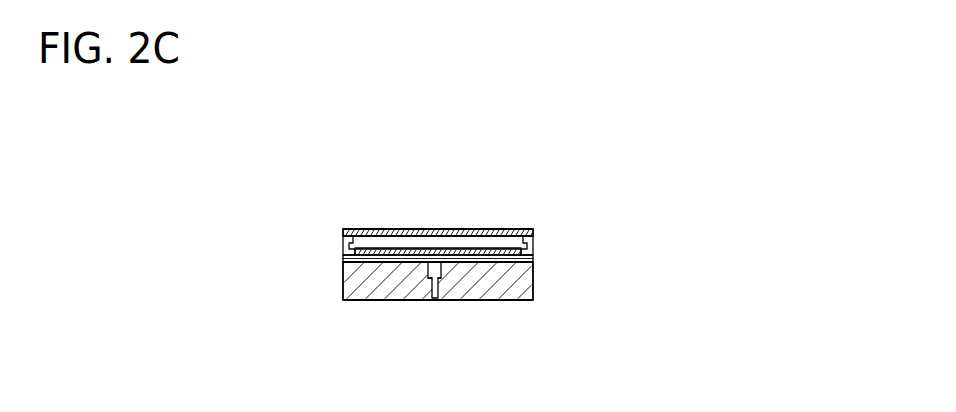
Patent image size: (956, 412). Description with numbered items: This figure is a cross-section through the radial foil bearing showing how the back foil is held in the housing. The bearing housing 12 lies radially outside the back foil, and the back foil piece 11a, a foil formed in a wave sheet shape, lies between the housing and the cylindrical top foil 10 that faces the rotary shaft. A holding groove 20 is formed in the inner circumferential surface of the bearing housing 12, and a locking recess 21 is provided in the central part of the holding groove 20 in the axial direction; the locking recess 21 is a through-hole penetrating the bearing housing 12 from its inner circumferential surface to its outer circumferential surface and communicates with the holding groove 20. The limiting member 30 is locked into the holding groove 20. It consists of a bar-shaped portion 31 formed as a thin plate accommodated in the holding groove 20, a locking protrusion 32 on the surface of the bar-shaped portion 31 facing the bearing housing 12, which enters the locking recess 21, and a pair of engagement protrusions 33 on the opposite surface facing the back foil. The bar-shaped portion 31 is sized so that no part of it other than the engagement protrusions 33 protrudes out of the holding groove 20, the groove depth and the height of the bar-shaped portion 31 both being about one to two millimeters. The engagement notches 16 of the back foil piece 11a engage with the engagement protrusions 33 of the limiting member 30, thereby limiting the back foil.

The top foil 10 is at (421, 229).
The back foil piece 11a is at (468, 249).
The bearing housing 12 is at (378, 283).
The engagement notch 16 is at (346, 255).
The holding groove 20 is at (485, 263).
The locking recess 21 is at (436, 298).
The limiting member 30 is at (500, 242).
The bar-shaped portion 31 is at (393, 256).
The locking protrusion 32 is at (429, 275).
The engagement protrusion 33 is at (344, 244).